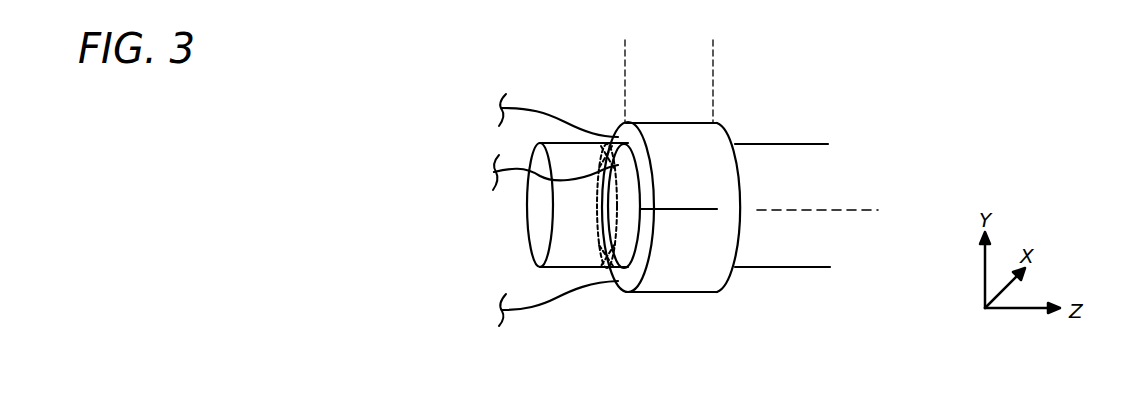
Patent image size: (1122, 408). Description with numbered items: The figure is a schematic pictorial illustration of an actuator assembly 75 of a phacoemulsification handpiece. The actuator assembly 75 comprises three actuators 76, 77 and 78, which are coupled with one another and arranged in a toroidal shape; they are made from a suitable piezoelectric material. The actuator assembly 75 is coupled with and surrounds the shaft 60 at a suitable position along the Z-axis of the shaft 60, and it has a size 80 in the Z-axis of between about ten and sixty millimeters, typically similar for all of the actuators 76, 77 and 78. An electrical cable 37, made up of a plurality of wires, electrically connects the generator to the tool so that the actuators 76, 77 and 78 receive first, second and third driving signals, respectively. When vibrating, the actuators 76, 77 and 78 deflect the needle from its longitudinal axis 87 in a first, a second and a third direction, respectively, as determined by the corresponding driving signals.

The electrical cable 37 is at (511, 108).
The shaft 60 is at (541, 199).
The actuator assembly 75 is at (703, 204).
The actuator 76 is at (670, 122).
The actuator 77 is at (604, 190).
The actuator 78 is at (653, 293).
The size 80 is at (713, 36).
The longitudinal axis 87 is at (870, 210).